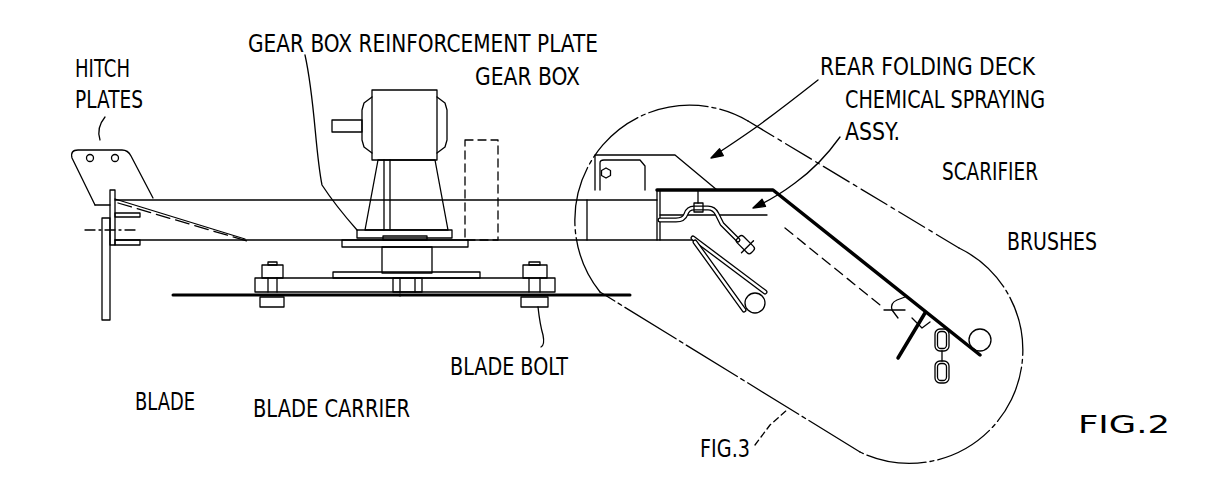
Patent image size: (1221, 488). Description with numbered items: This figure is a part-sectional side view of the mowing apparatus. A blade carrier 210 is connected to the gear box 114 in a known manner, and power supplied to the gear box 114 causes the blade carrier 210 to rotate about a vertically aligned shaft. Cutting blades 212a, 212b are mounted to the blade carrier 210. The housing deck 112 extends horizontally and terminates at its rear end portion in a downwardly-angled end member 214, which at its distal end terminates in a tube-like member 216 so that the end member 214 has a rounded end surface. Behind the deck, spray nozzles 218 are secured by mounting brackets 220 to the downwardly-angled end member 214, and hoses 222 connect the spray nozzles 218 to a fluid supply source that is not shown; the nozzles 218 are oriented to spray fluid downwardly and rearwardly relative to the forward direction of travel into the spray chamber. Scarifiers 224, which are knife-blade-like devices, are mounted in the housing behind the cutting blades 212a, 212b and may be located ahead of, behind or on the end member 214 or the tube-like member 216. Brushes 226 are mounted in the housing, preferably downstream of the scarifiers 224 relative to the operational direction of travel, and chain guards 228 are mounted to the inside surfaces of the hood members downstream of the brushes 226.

The housing deck 112 is at (270, 240).
The gear box 114 is at (447, 112).
The blade carrier 210 is at (312, 293).
The cutting blade 212a is at (203, 296).
The cutting blade 212b is at (603, 296).
The downwardly-angled end member 214 is at (730, 293).
The tube-like member 216 is at (765, 312).
The spray nozzle 218 is at (757, 253).
The mounting bracket 220 is at (728, 252).
The hose 222 is at (727, 230).
The scarifier 224 is at (895, 300).
The brush 226 is at (913, 322).
The chain guard 228 is at (943, 385).